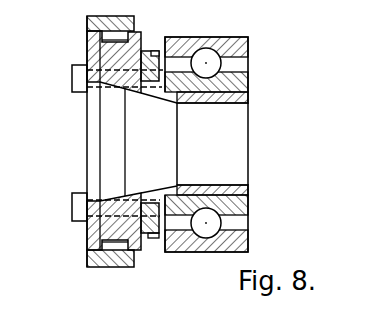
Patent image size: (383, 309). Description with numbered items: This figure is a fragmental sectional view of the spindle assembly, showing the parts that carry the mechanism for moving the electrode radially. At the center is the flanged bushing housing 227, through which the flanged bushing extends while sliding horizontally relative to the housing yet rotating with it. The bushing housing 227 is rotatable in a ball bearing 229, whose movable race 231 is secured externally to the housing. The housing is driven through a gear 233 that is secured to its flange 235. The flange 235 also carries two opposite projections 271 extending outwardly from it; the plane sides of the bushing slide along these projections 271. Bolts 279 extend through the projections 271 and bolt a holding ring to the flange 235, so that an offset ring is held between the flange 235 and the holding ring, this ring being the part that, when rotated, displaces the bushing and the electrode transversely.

The bushing housing 227 is at (226, 97).
The ball bearing 229 is at (301, 57).
The movable race 231 is at (236, 209).
The gear 233 is at (153, 238).
The flange 235 is at (135, 258).
The projections 271 is at (108, 227).
The bolts 279 is at (78, 69).